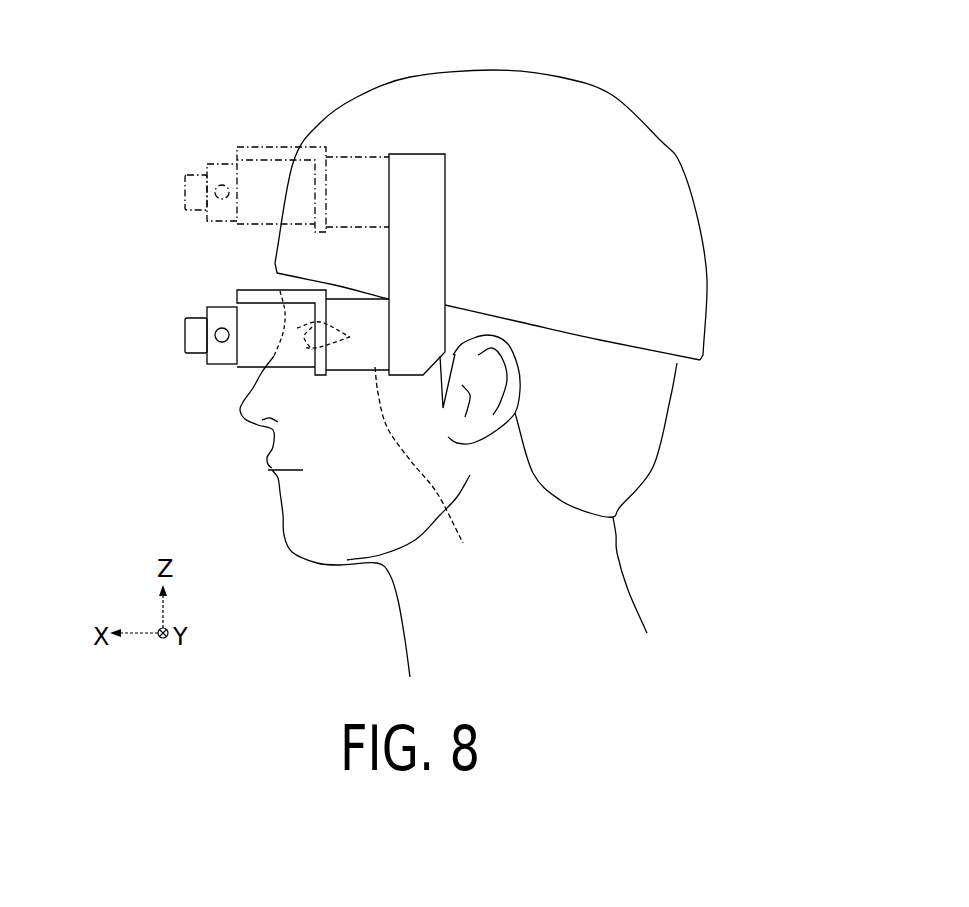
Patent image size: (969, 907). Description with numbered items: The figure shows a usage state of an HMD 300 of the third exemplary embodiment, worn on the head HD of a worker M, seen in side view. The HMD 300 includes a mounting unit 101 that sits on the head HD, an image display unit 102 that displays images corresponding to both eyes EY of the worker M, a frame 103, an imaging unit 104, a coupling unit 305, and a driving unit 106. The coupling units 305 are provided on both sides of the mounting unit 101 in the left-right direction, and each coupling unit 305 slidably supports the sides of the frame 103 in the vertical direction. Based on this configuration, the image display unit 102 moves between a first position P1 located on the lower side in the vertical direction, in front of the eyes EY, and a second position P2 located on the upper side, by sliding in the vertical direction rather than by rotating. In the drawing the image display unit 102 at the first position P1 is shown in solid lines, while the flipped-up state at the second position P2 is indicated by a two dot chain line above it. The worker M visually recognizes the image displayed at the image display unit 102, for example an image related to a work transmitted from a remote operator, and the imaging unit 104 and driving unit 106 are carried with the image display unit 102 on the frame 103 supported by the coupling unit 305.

The HMD 300 is at (427, 305).
The mounting unit 101 is at (657, 177).
The coupling unit 305 is at (413, 170).
The image display unit 102 is at (258, 357).
The frame 103 is at (431, 473).
The imaging unit 104 is at (187, 343).
The driving unit 106 is at (221, 342).
The first position P1 is at (233, 362).
The second position P2 is at (136, 148).
The eyes EY is at (298, 327).
The head HD is at (647, 392).
The worker M is at (638, 557).